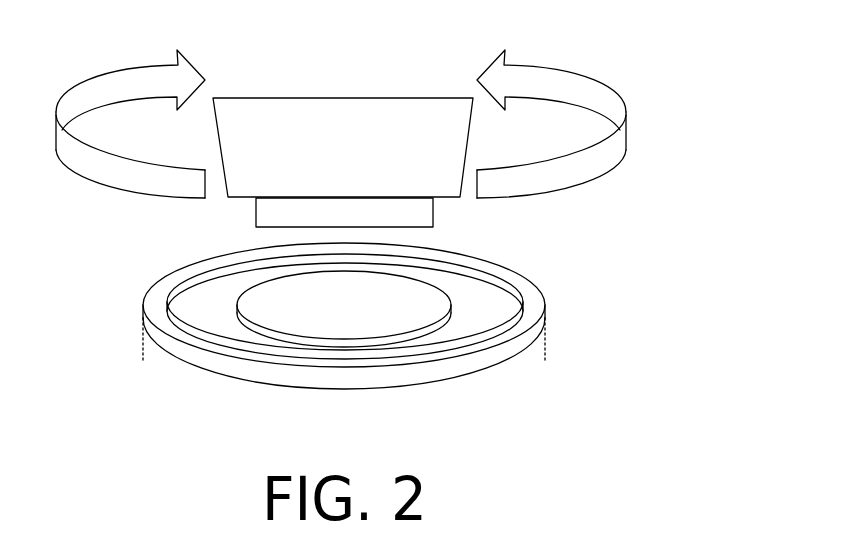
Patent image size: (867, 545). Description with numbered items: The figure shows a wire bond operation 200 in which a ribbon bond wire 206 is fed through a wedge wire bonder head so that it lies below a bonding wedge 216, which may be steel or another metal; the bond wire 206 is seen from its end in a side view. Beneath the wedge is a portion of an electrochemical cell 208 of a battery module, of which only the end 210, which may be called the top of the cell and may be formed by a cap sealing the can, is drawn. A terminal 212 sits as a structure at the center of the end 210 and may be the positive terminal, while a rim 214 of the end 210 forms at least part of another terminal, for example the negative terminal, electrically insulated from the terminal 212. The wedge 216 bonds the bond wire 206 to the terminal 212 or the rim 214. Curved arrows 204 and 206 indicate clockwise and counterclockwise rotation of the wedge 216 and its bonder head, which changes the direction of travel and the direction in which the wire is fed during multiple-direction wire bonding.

The wire bond operation 200 is at (725, 61).
The arrow 204 is at (63, 168).
The bond wire 206 is at (419, 225).
The electrochemical cell 208 is at (142, 350).
The end 210 is at (301, 316).
The terminal 212 is at (365, 333).
The rim 214 is at (199, 260).
The bonding wedge 216 is at (457, 133).